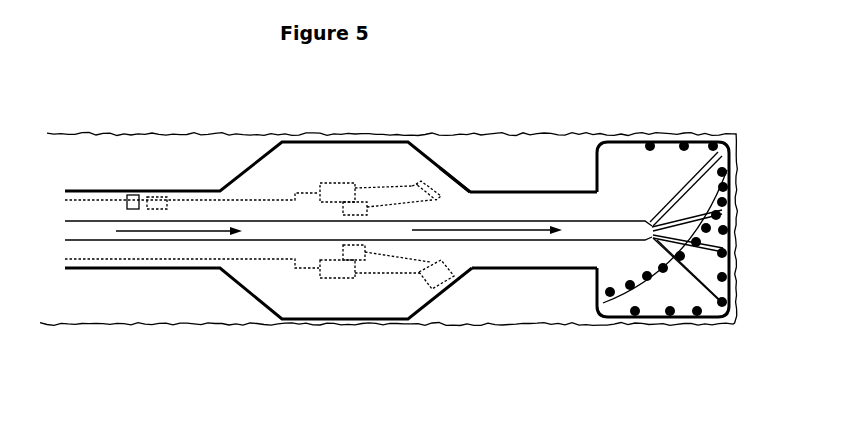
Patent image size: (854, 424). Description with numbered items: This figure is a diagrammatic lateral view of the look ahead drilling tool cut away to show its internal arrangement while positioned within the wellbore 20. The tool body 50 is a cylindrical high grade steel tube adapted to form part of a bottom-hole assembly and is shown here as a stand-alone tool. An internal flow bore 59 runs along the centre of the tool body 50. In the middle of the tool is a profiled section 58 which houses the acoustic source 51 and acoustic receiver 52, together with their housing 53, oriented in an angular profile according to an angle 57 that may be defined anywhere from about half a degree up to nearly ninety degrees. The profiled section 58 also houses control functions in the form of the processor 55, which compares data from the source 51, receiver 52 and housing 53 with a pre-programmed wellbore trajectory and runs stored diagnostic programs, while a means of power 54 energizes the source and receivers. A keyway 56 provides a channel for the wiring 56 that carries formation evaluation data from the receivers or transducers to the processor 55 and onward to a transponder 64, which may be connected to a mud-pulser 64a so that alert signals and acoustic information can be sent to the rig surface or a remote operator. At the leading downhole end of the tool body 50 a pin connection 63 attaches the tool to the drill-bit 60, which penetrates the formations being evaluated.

The wellbore 20 is at (154, 324).
The tool body 50 is at (285, 141).
The acoustic source 51 is at (440, 198).
The acoustic receiver 52 is at (445, 199).
The housing 53 is at (450, 196).
The means of power 54 is at (358, 202).
The processor 55 is at (333, 183).
The keyway with wiring 56 is at (412, 200).
The angle 57 is at (456, 191).
The profiled section 58 is at (466, 188).
The internal flow bore 59 is at (82, 230).
The drill-bit 60 is at (686, 226).
The pin connection 63 is at (570, 190).
The transponder 64 is at (147, 197).
The mud-pulser 64a is at (128, 195).